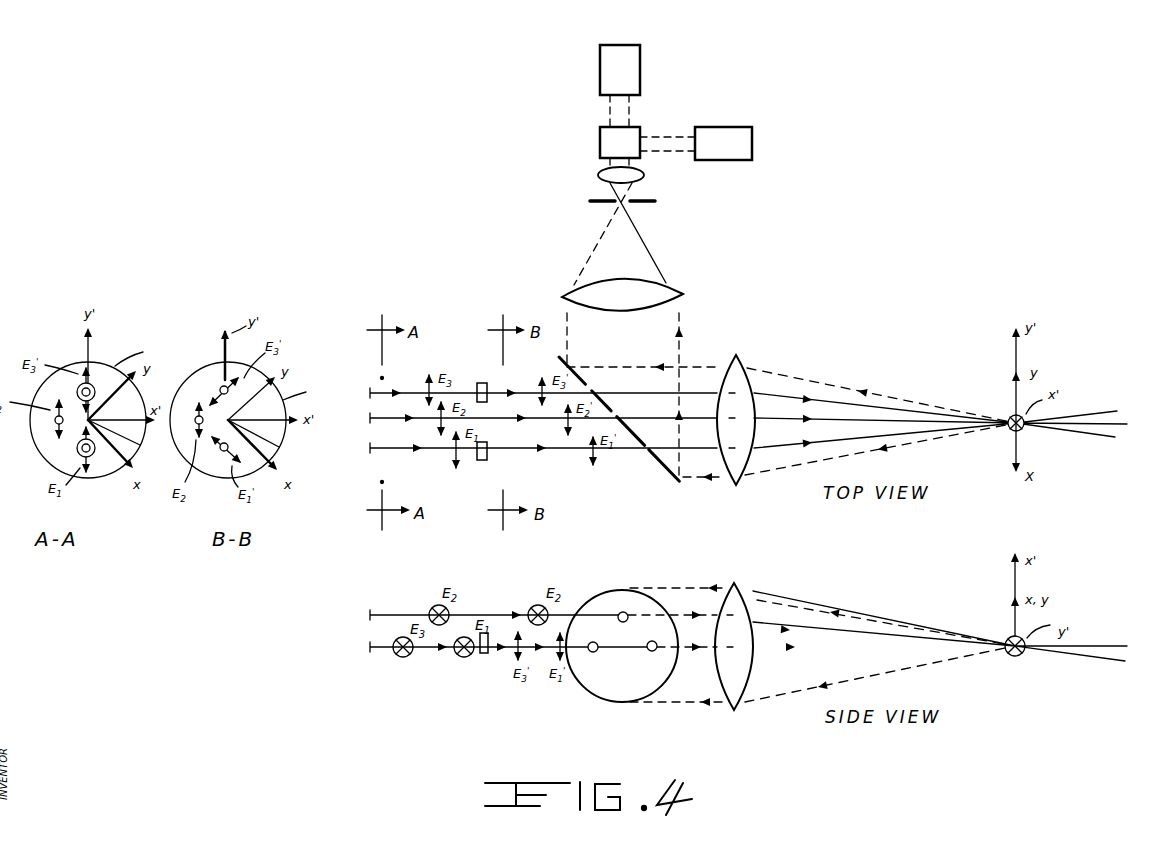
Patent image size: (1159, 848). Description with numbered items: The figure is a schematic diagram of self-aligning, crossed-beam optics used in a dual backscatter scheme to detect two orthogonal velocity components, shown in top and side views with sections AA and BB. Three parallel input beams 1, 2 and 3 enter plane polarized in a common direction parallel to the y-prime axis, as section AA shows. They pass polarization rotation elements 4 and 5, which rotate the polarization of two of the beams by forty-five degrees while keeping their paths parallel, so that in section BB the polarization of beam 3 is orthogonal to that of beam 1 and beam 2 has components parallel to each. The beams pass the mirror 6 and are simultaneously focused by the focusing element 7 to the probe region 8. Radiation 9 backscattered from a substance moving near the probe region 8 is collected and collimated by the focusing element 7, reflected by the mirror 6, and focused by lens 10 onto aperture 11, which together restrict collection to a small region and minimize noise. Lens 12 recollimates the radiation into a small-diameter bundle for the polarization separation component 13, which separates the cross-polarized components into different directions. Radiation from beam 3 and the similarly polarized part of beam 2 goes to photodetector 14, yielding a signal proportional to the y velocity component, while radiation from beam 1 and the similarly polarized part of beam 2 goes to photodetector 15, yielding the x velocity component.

The input beam 1 is at (408, 536).
The input beam 2 is at (391, 510).
The input beam 3 is at (408, 513).
The polarization rotation element 4 is at (481, 383).
The polarization rotation element 5 is at (487, 455).
The mirror 6 is at (662, 466).
The focusing element 7 is at (740, 487).
The probe region 8 is at (1008, 432).
The backscattered radiation 9 is at (878, 393).
The lens 10 is at (683, 293).
The aperture 11 is at (647, 204).
The lens 12 is at (644, 178).
The polarization separation component 13 is at (600, 142).
The photodetector 14 is at (640, 78).
The photodetector 15 is at (752, 143).